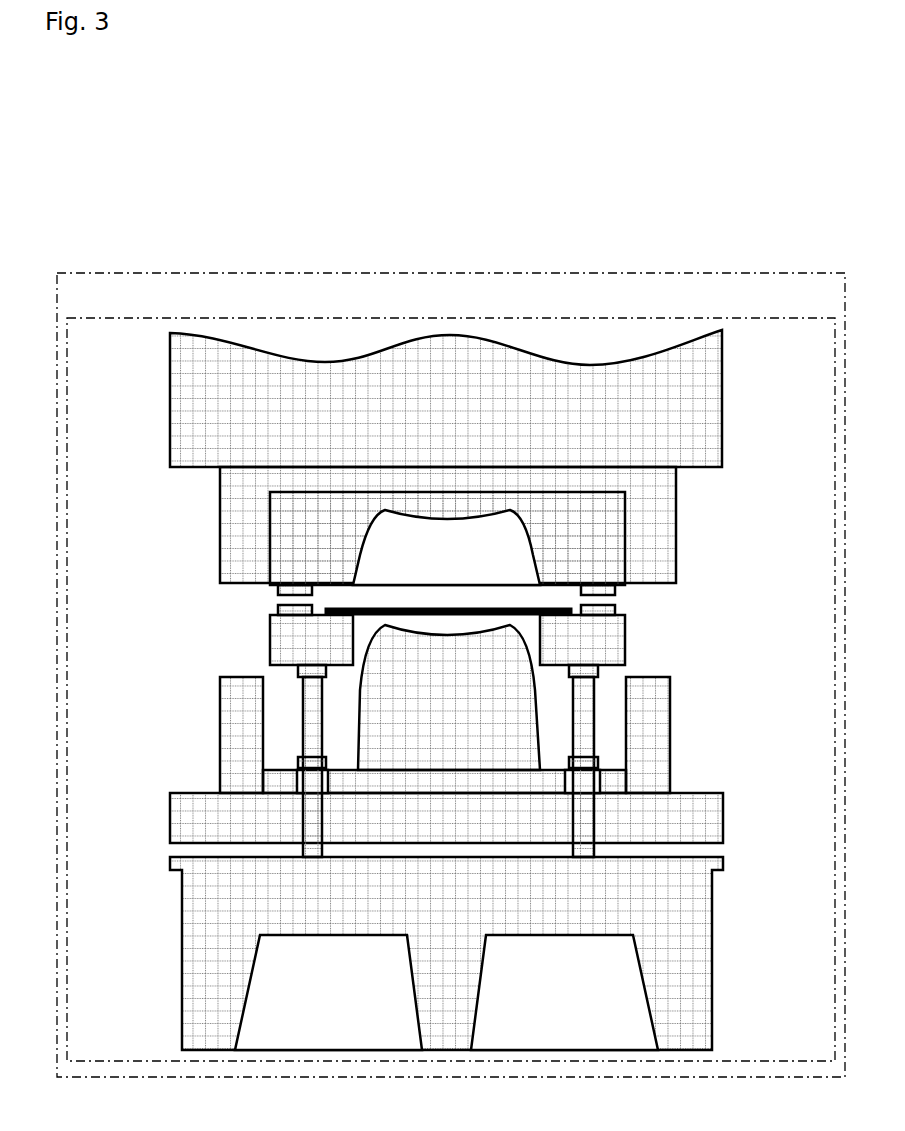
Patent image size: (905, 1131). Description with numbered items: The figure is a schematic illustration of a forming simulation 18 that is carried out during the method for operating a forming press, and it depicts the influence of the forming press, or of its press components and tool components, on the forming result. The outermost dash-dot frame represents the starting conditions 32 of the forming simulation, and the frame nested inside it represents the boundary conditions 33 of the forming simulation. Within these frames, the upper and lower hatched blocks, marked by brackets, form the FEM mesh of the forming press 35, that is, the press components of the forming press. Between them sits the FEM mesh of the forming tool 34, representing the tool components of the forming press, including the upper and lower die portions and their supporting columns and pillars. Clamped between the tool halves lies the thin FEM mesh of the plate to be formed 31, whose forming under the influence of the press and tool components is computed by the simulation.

The forming simulation 18 is at (113, 157).
The FEM mesh of the plate to be formed 31 is at (482, 610).
The starting conditions 32 is at (142, 277).
The boundary conditions 33 is at (220, 318).
The FEM mesh of the forming tool 34 is at (752, 475).
The FEM mesh of the forming press 35 is at (752, 333).